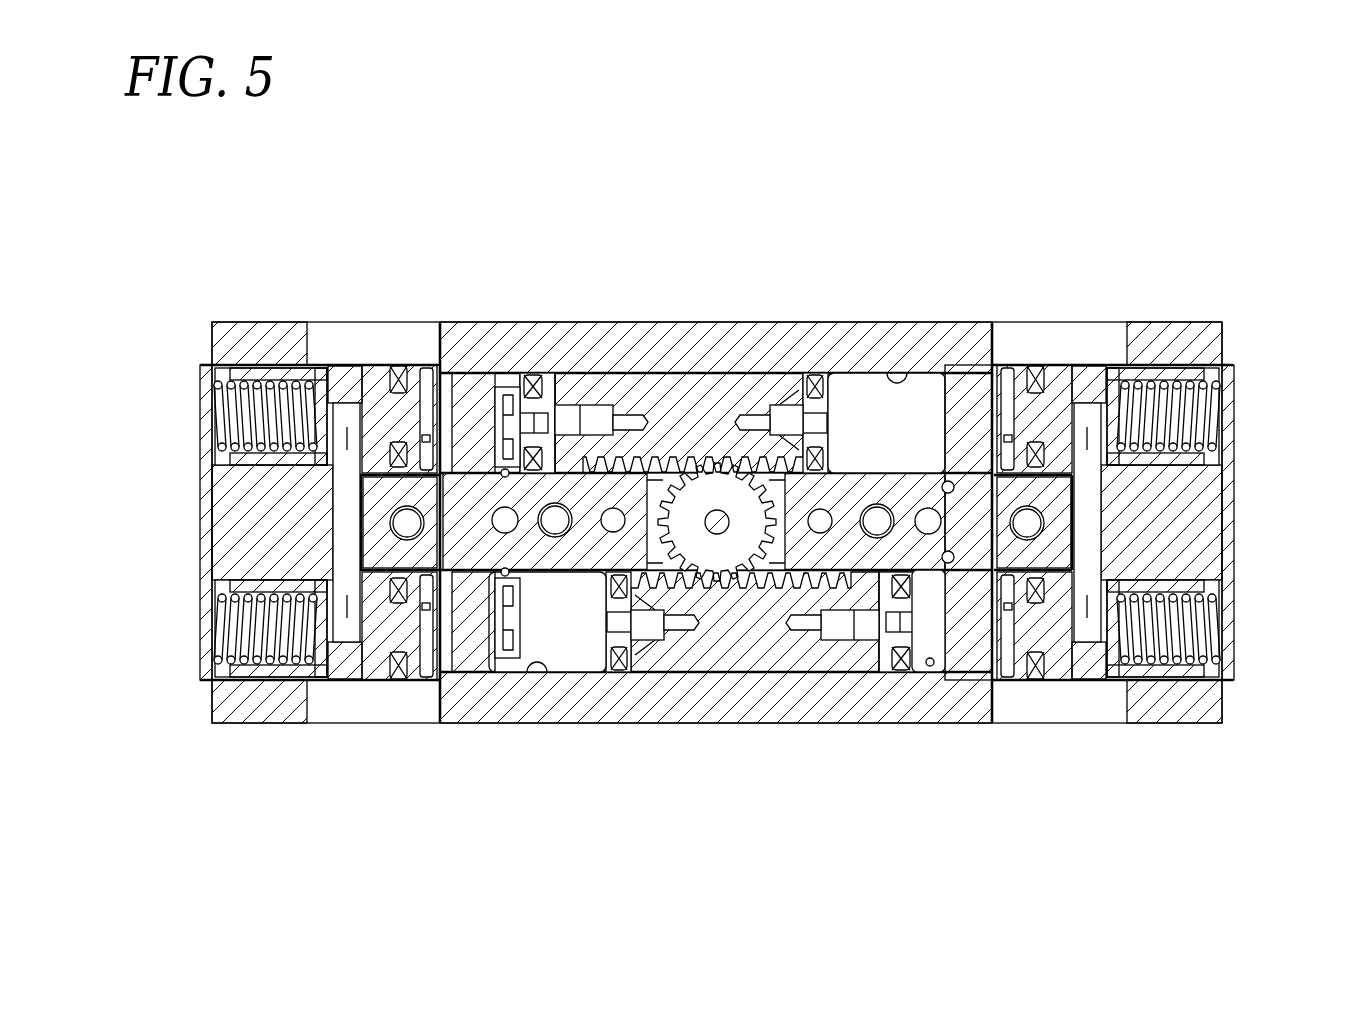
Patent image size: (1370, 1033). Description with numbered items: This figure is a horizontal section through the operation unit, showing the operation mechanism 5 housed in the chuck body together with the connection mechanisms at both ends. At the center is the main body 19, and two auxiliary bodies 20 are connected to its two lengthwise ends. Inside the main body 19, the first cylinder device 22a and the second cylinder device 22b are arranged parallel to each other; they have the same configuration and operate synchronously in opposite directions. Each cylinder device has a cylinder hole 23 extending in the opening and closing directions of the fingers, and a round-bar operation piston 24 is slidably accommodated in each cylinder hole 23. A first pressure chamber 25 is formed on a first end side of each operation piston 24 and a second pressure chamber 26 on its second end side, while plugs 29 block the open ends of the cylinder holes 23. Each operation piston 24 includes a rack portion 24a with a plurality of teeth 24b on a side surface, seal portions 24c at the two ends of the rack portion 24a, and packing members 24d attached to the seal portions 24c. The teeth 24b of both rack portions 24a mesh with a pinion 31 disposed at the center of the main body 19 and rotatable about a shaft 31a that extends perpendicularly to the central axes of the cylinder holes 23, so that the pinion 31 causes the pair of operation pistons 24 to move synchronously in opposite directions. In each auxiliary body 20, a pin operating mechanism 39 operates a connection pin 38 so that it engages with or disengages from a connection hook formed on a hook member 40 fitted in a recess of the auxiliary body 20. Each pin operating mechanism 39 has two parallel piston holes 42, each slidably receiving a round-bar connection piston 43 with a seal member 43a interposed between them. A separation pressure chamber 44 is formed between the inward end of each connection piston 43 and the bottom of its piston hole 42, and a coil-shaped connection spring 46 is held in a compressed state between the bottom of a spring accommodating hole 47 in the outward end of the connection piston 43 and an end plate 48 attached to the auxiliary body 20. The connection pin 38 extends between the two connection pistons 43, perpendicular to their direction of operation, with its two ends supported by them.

The operation mechanism 5 is at (693, 205).
The main body 19 is at (780, 335).
The auxiliary body 20 is at (232, 340).
The first cylinder device 22a is at (743, 345).
The second cylinder device 22b is at (838, 695).
The cylinder hole 23 is at (901, 380).
The operation piston 24 is at (710, 360).
The rack portion 24a is at (633, 390).
The teeth 24b is at (675, 465).
The seal portion 24c is at (570, 395).
The packing member 24d is at (560, 412).
The first pressure chamber 25 is at (932, 405).
The second pressure chamber 26 is at (505, 390).
The plug 29 is at (466, 410).
The pinion 31 is at (705, 560).
The shaft 31a is at (722, 520).
The connection pin 38 is at (345, 490).
The pin operating mechanism 39 is at (1240, 372).
The hook member 40 is at (385, 550).
The piston hole 42 is at (258, 372).
The connection piston 43 is at (362, 400).
The seal member 43a is at (398, 375).
The separation pressure chamber 44 is at (428, 372).
The connection spring 46 is at (262, 408).
The spring accommodating hole 47 is at (300, 400).
The end plate 48 is at (207, 430).